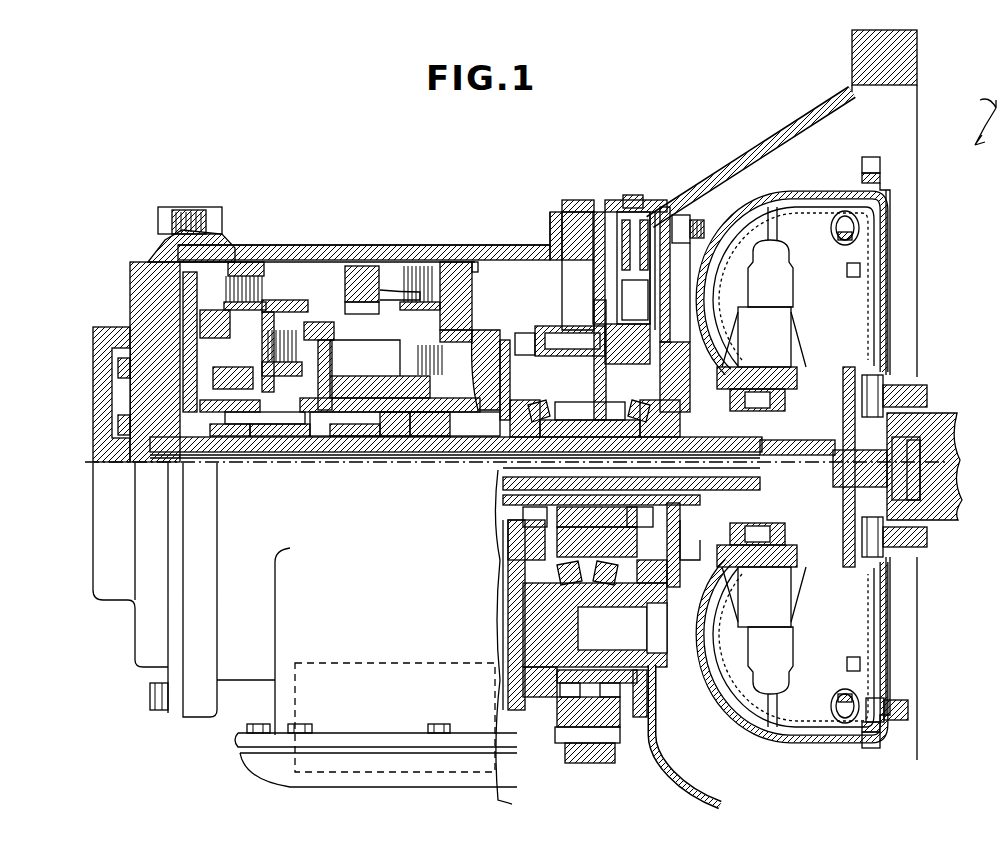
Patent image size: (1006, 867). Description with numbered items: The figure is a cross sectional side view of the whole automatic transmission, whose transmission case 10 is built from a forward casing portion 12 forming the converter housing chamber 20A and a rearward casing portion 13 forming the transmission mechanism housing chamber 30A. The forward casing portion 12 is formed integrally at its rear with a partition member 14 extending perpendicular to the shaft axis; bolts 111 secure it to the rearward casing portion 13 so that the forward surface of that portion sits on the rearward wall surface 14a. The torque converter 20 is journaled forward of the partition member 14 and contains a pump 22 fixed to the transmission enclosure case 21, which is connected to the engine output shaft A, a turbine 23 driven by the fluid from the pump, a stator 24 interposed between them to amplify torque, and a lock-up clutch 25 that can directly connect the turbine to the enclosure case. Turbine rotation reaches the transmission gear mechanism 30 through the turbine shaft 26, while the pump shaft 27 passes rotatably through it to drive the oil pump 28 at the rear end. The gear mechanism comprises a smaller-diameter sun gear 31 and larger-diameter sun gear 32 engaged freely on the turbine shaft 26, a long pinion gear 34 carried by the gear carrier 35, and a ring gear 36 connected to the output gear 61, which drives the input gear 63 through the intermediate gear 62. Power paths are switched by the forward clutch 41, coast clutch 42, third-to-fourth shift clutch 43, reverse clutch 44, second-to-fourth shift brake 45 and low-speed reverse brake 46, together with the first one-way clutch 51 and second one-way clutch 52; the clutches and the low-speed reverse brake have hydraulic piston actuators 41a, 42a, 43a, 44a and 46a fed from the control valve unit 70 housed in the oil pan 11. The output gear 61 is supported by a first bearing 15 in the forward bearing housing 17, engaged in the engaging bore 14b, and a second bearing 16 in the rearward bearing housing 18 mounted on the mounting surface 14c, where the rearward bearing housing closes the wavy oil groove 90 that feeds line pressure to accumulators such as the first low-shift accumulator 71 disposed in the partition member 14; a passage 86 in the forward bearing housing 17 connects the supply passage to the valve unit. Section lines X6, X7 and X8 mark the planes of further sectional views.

The transmission case 10 is at (508, 235).
The oil pan 11 is at (282, 775).
The forward casing portion 12 is at (728, 178).
The rearward casing portion 13 is at (530, 254).
The partition member 14 is at (579, 271).
The rearward wall surface 14a is at (585, 212).
The engaging bore 14b is at (640, 368).
The mounting surface 14c is at (600, 368).
The first bearing 15 is at (634, 403).
The second bearing 16 is at (547, 403).
The forward bearing housing 17 is at (672, 325).
The rearward bearing housing 18 is at (562, 326).
The torque converter 20 is at (822, 173).
The converter housing chamber 20A is at (797, 140).
The transmission enclosure case 21 is at (776, 196).
The pump 22 is at (746, 222).
The turbine 23 is at (805, 245).
The stator 24 is at (768, 322).
The lock-up clutch 25 is at (852, 212).
The turbine shaft 26 is at (462, 448).
The pump shaft 27 is at (490, 462).
The oil pump 28 is at (118, 385).
The transmission gear mechanism 30 is at (358, 511).
The transmission mechanism housing chamber 30A is at (522, 250).
The smaller-diameter sun gear 31 is at (385, 440).
The larger-diameter sun gear 32 is at (312, 440).
The long pinion gear 34 is at (405, 440).
The gear carrier 35 is at (425, 440).
The ring gear 36 is at (425, 386).
The forward clutch 41 is at (318, 334).
The actuator for forward clutch 41a is at (180, 303).
The coast clutch 42 is at (268, 338).
The actuator for coast clutch 42a is at (200, 352).
The 3-4 shift clutch 43 is at (462, 332).
The actuator for 3-4 clutch 43a is at (510, 360).
The reverse clutch 44 is at (248, 262).
The actuator for reverse clutch 44a is at (190, 284).
The 2-4 shift brake 45 is at (282, 320).
The low-speed reverse brake 46 is at (418, 266).
The actuator for low-speed reverse brake 46a is at (450, 265).
The first one-way clutch 51 is at (280, 420).
The second one-way clutch 52 is at (366, 295).
The output gear 61 is at (596, 418).
The intermediate gear 62 is at (558, 712).
The input gear 63 is at (566, 760).
The control valve unit 70 is at (327, 772).
The first 1-2 accumulator 71 is at (616, 188).
The passage 86 is at (694, 558).
The oil groove 90 is at (598, 312).
The bolts 111 is at (690, 228).
The engine output shaft A is at (948, 436).
The section line X6 is at (300, 228).
The section line X7 is at (632, 185).
The section line X8 is at (606, 166).